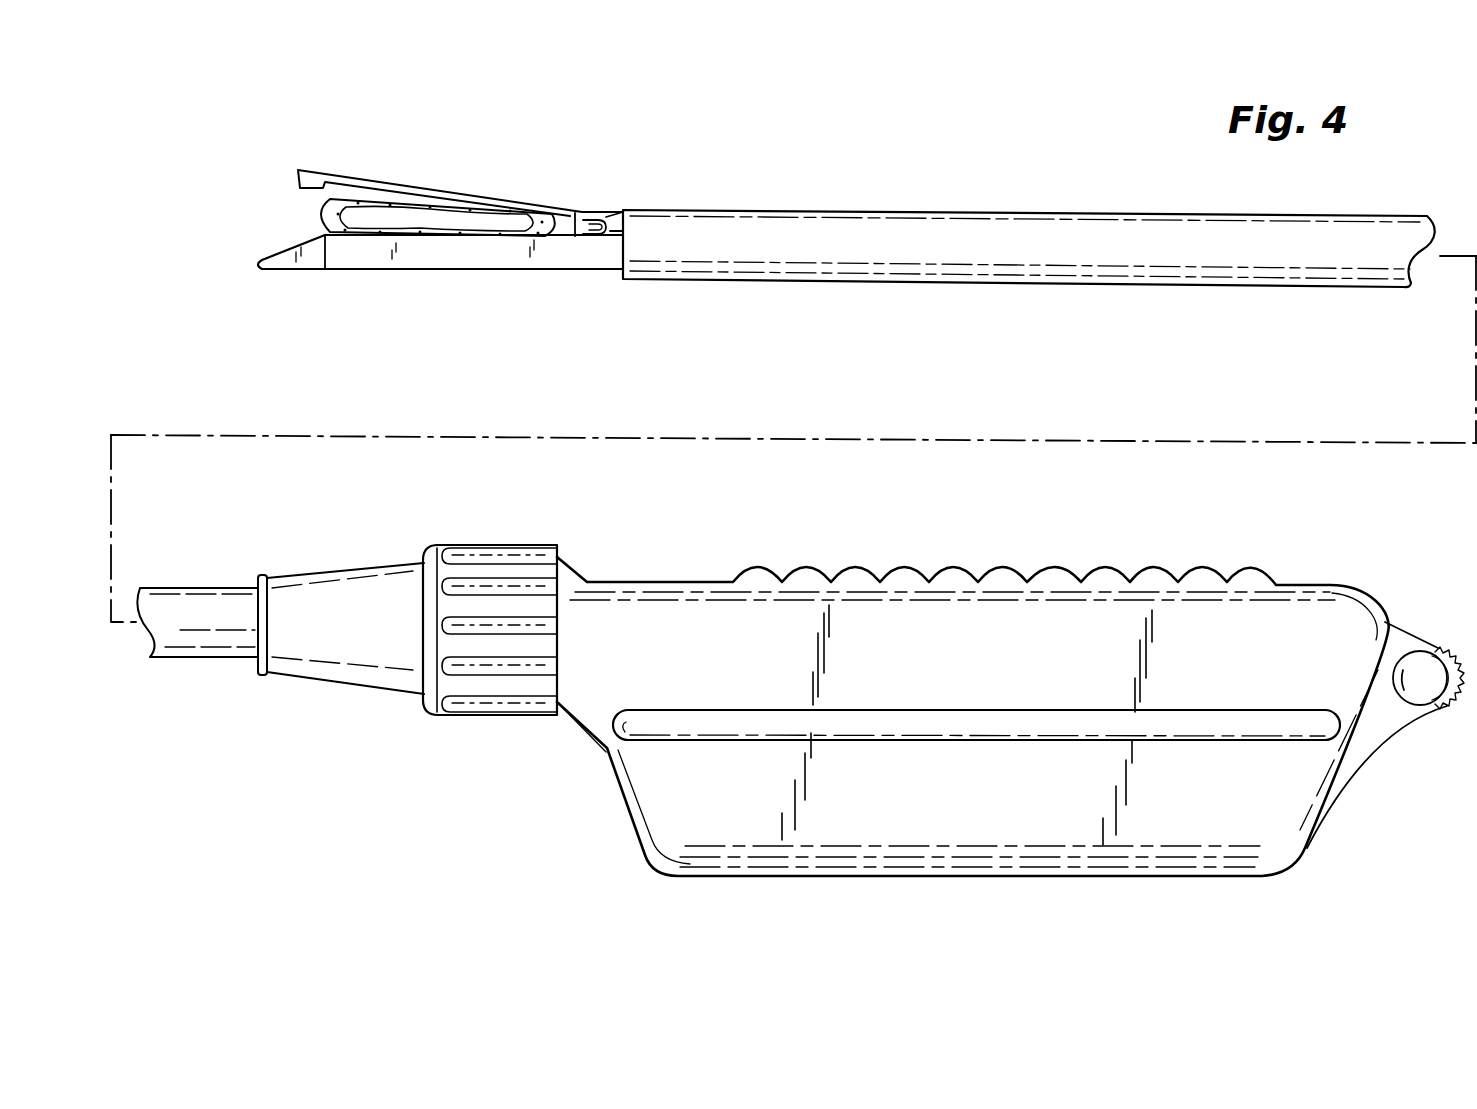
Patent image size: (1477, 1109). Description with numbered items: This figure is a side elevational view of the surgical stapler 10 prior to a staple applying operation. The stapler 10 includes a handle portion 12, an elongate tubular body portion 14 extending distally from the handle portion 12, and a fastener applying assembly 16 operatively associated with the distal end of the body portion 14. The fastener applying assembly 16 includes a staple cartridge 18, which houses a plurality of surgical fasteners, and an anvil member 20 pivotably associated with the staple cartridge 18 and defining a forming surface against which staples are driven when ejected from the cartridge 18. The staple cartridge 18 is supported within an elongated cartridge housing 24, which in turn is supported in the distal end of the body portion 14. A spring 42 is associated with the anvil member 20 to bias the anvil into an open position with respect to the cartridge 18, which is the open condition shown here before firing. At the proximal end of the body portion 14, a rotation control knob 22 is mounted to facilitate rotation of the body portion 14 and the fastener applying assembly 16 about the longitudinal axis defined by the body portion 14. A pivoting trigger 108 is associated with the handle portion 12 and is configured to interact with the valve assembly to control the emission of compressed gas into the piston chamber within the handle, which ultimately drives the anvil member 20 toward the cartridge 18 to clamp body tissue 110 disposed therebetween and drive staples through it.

The surgical stapler 10 is at (937, 191).
The handle portion 12 is at (985, 655).
The elongate tubular body portion 14 is at (985, 250).
The fastener applying assembly 16 is at (339, 149).
The staple cartridge 18 is at (284, 262).
The anvil member 20 is at (420, 187).
The rotation control knob 22 is at (497, 692).
The cartridge housing 24 is at (466, 258).
The spring 42 is at (584, 216).
The pivoting trigger 108 is at (1375, 740).
The body tissue 110 is at (318, 212).